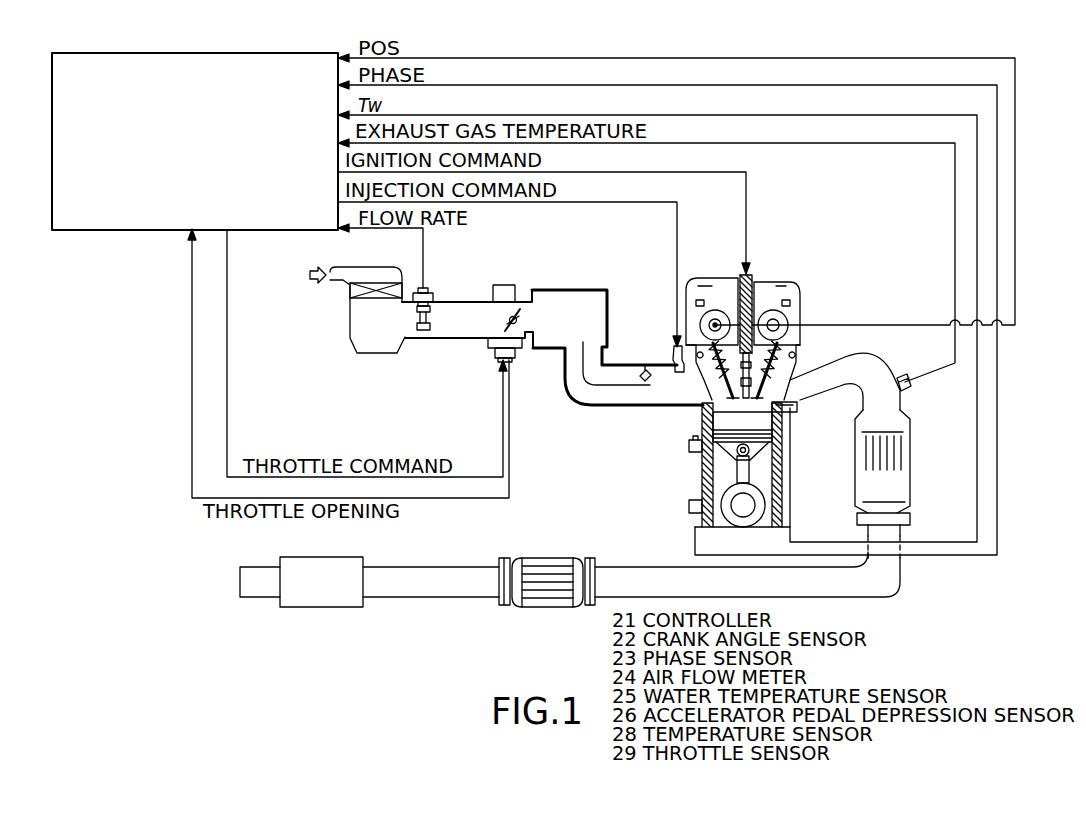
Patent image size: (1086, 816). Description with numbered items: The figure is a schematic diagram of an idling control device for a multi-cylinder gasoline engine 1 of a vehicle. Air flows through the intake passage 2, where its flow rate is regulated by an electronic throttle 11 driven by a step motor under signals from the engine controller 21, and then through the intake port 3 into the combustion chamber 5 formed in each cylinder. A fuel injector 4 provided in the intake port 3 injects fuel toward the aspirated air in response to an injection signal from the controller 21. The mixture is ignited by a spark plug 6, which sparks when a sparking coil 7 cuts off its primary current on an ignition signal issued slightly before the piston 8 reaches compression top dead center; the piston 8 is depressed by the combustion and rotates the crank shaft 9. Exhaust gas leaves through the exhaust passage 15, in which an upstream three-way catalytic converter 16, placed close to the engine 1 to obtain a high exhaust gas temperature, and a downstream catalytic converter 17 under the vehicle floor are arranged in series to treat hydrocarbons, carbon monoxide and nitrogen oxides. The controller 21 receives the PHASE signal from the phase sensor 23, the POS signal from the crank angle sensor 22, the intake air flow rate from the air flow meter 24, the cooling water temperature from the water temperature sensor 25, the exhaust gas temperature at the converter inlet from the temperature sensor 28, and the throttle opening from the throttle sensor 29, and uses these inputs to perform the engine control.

The engine 1 is at (674, 477).
The intake passage 2 is at (456, 338).
The intake port 3 is at (680, 393).
The fuel injector 4 is at (674, 350).
The combustion chamber 5 is at (703, 423).
The spark plug 6 is at (797, 366).
The sparking coil 7 is at (752, 292).
The piston 8 is at (762, 456).
The crank shaft 9 is at (748, 505).
The electronic throttle 11 is at (523, 316).
The exhaust passage 15 is at (853, 373).
The upstream three-way catalytic converter 16 is at (897, 483).
The downstream catalytic converter 17 is at (544, 557).
The engine controller 21 is at (250, 53).
The crank angle sensor 22 is at (688, 513).
The phase sensor 23 is at (715, 322).
The air flow meter 24 is at (432, 290).
The water temperature sensor 25 is at (798, 417).
The temperature sensor 28 is at (906, 389).
The throttle sensor 29 is at (513, 362).